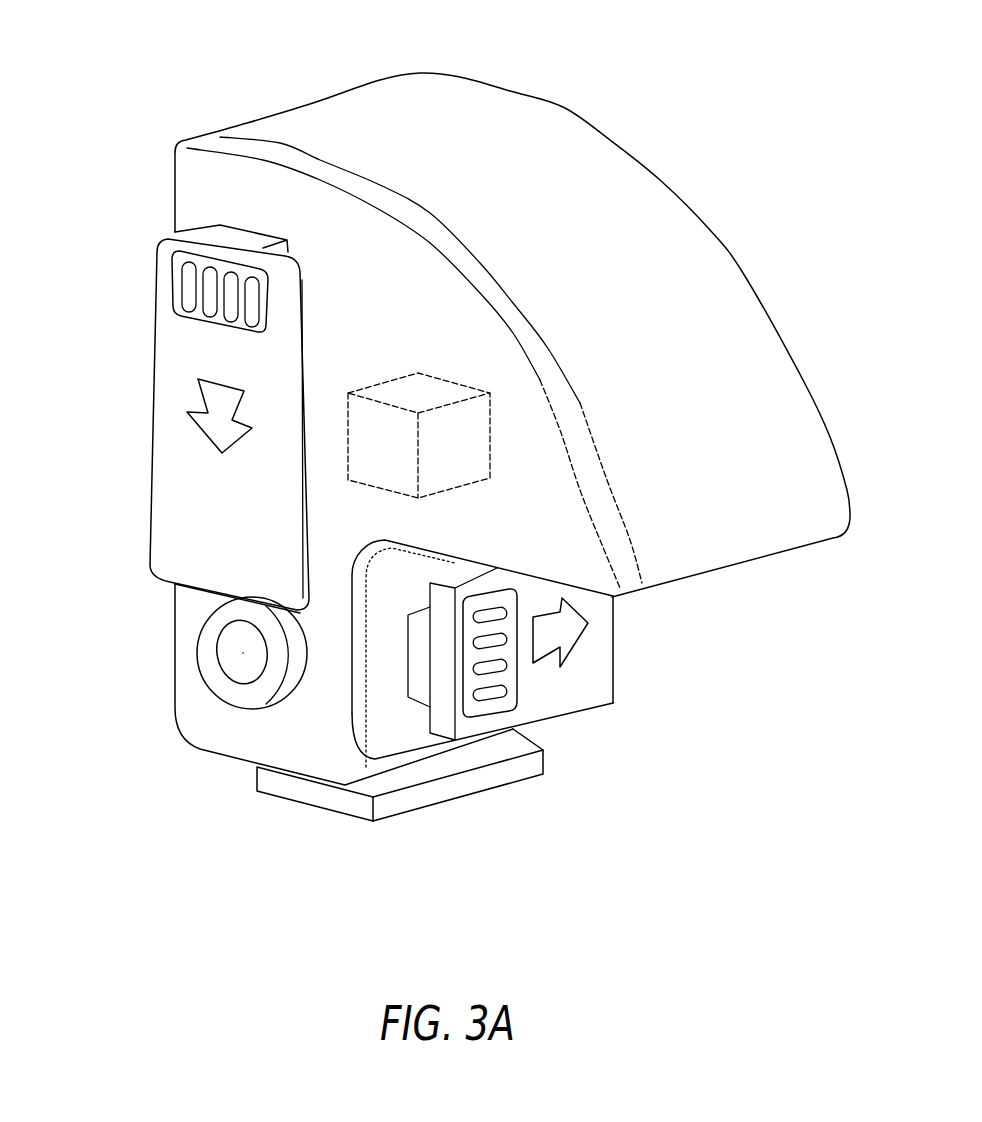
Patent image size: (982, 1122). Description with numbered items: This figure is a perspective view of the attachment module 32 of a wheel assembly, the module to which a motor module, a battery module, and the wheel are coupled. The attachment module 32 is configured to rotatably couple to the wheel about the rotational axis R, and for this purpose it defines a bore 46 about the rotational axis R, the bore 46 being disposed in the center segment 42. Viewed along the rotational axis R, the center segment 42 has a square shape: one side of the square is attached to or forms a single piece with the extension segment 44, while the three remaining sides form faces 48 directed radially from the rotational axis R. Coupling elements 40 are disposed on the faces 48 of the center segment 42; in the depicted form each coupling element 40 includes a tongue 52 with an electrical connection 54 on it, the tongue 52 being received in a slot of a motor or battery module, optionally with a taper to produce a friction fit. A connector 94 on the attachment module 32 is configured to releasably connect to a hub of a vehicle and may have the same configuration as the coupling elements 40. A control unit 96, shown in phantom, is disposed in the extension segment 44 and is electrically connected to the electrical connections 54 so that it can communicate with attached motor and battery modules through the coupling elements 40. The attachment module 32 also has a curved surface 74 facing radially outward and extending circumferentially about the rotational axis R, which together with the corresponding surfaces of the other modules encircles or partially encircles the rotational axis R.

The attachment module 32 is at (183, 63).
The coupling element 40 is at (573, 710).
The center segment 42 is at (175, 662).
The extension segment 44 is at (176, 195).
The bore 46 is at (257, 680).
The face 48 is at (358, 712).
The tongue 52 is at (523, 780).
The electrical connection 54 is at (172, 283).
The curved surface 74 is at (744, 270).
The connector 94 is at (152, 417).
The control unit 96 is at (435, 370).
The rotational axis R is at (243, 653).